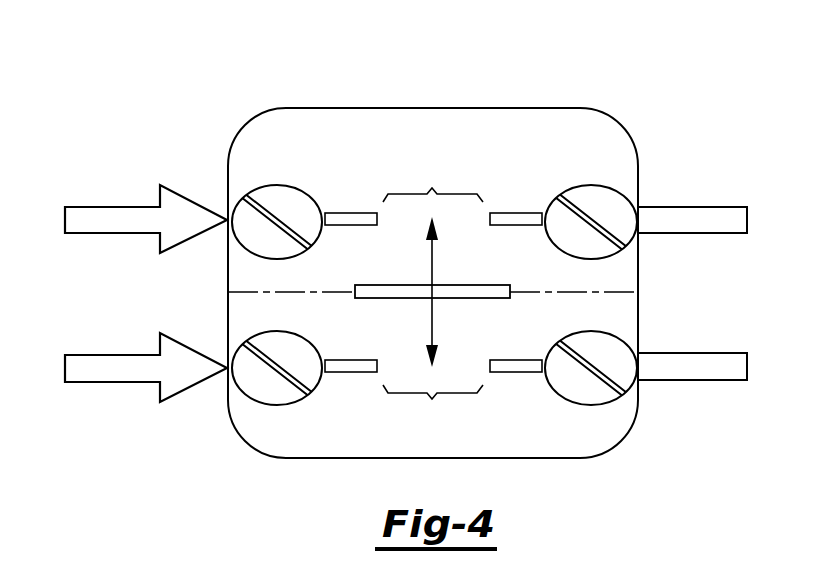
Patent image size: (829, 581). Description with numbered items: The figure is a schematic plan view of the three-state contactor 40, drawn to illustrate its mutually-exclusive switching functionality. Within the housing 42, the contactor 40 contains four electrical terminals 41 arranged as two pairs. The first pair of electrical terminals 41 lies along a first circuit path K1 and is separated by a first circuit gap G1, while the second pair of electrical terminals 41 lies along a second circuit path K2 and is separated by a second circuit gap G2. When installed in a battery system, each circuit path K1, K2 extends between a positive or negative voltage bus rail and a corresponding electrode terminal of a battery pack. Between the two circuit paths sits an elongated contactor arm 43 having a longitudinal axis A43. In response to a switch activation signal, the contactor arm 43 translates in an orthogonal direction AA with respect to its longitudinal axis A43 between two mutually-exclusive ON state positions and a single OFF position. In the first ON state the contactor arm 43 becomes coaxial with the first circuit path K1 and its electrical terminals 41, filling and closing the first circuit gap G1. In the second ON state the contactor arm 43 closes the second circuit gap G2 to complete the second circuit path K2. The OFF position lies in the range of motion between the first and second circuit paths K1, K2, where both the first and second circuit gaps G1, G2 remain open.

The three-state contactor 40 is at (389, 233).
The electrical terminals 41 is at (295, 187).
The housing 42 is at (228, 278).
The contactor arm 43 is at (397, 284).
The first circuit path K1 is at (126, 219).
The second circuit path K2 is at (126, 367).
The first circuit gap G1 is at (433, 179).
The second circuit gap G2 is at (433, 409).
The orthogonal direction of translation AA is at (432, 262).
The longitudinal axis A43 is at (489, 321).